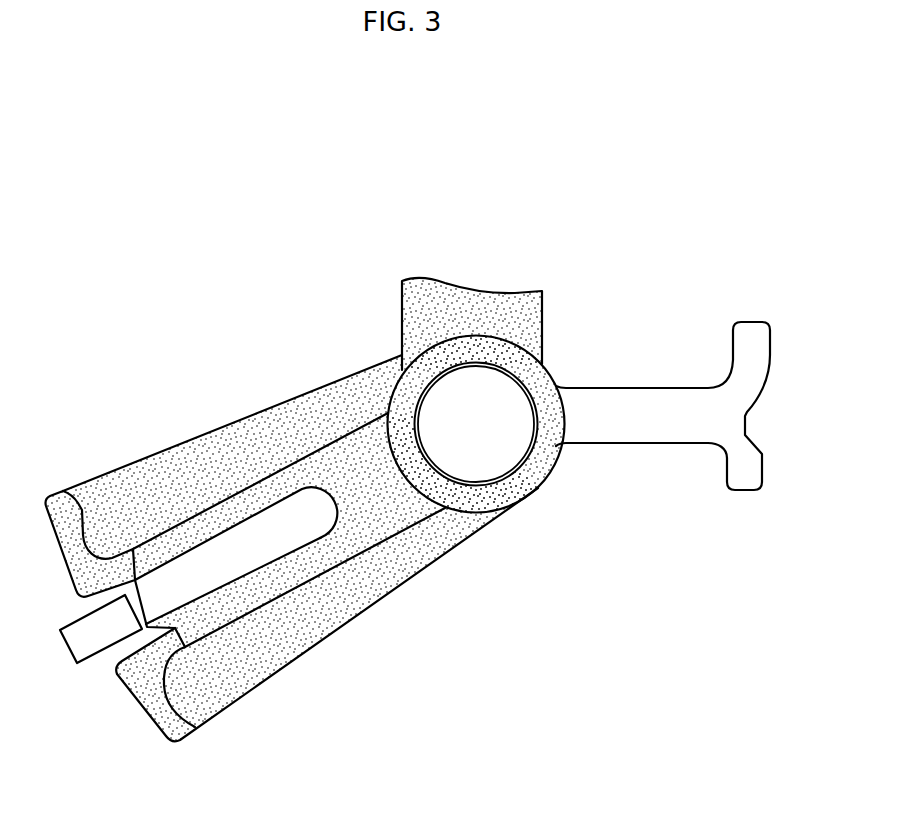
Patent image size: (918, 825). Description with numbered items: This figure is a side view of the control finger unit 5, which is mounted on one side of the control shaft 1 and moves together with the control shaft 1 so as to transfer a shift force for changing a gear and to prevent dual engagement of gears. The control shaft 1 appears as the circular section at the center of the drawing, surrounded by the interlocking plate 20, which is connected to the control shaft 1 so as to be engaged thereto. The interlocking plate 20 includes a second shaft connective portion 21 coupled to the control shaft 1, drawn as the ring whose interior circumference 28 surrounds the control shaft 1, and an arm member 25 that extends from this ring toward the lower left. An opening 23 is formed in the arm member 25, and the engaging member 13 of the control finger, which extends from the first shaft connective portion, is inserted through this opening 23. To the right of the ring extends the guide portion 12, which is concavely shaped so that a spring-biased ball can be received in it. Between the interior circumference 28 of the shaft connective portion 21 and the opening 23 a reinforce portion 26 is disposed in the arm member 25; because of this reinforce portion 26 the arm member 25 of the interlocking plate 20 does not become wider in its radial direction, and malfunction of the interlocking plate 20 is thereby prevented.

The control shaft 1 is at (503, 462).
The control finger unit 5 is at (544, 245).
The guide portion 12 is at (752, 358).
The engaging member 13 is at (157, 604).
The interlocking plate 20 is at (246, 293).
The second shaft connective portion 21 is at (407, 378).
The opening 23 is at (308, 523).
The arm member 25 is at (240, 637).
The reinforce portion 26 is at (368, 497).
The interior circumference 28 is at (451, 466).